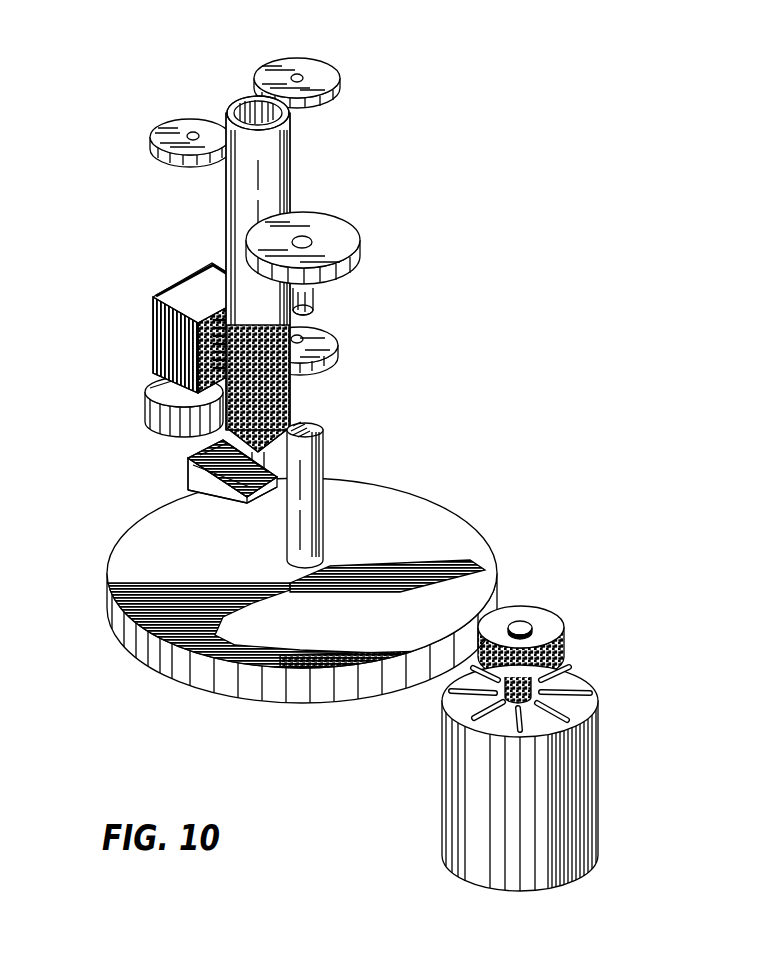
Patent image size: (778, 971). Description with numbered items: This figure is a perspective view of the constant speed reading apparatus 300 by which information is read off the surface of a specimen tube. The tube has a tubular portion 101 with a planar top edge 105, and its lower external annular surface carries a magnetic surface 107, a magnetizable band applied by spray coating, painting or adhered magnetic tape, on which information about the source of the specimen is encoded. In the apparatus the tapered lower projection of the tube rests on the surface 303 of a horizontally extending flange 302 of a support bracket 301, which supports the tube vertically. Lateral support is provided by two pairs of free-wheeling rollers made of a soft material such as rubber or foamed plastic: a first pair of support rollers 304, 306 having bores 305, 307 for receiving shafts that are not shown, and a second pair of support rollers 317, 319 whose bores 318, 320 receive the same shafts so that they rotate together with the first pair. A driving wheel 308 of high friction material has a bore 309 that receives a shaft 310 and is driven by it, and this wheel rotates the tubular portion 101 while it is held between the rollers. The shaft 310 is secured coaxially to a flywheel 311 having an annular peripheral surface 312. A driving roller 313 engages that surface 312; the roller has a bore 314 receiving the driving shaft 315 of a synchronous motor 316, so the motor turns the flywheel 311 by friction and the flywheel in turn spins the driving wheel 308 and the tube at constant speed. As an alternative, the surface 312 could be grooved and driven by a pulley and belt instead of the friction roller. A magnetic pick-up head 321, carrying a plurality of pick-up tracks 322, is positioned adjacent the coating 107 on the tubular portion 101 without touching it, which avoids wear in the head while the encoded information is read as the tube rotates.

The constant speed reading apparatus 300 is at (418, 44).
The tubular portion 101 is at (292, 158).
The top edge 105 is at (240, 100).
The magnetic surface 107 is at (284, 402).
The support bracket 301 is at (190, 483).
The flange 302 is at (193, 478).
The surface 303 is at (205, 452).
The support roller 304 is at (333, 82).
The bore 305 is at (297, 78).
The support roller 306 is at (172, 166).
The bore 307 is at (193, 136).
The driving wheel 308 is at (345, 243).
The bore 309 is at (305, 240).
The shaft 310 is at (314, 300).
The flywheel 311 is at (440, 515).
The annular peripheral surface 312 is at (215, 680).
The driving roller 313 is at (553, 626).
The bore 314 is at (525, 622).
The driving shaft 315 is at (570, 683).
The synchronous motor 316 is at (585, 765).
The support roller 317 is at (150, 388).
The bore 318 is at (160, 400).
The support roller 319 is at (322, 345).
The bore 320 is at (297, 339).
The magnetic pick-up head 321 is at (153, 303).
The pick-up tracks 322 is at (215, 334).